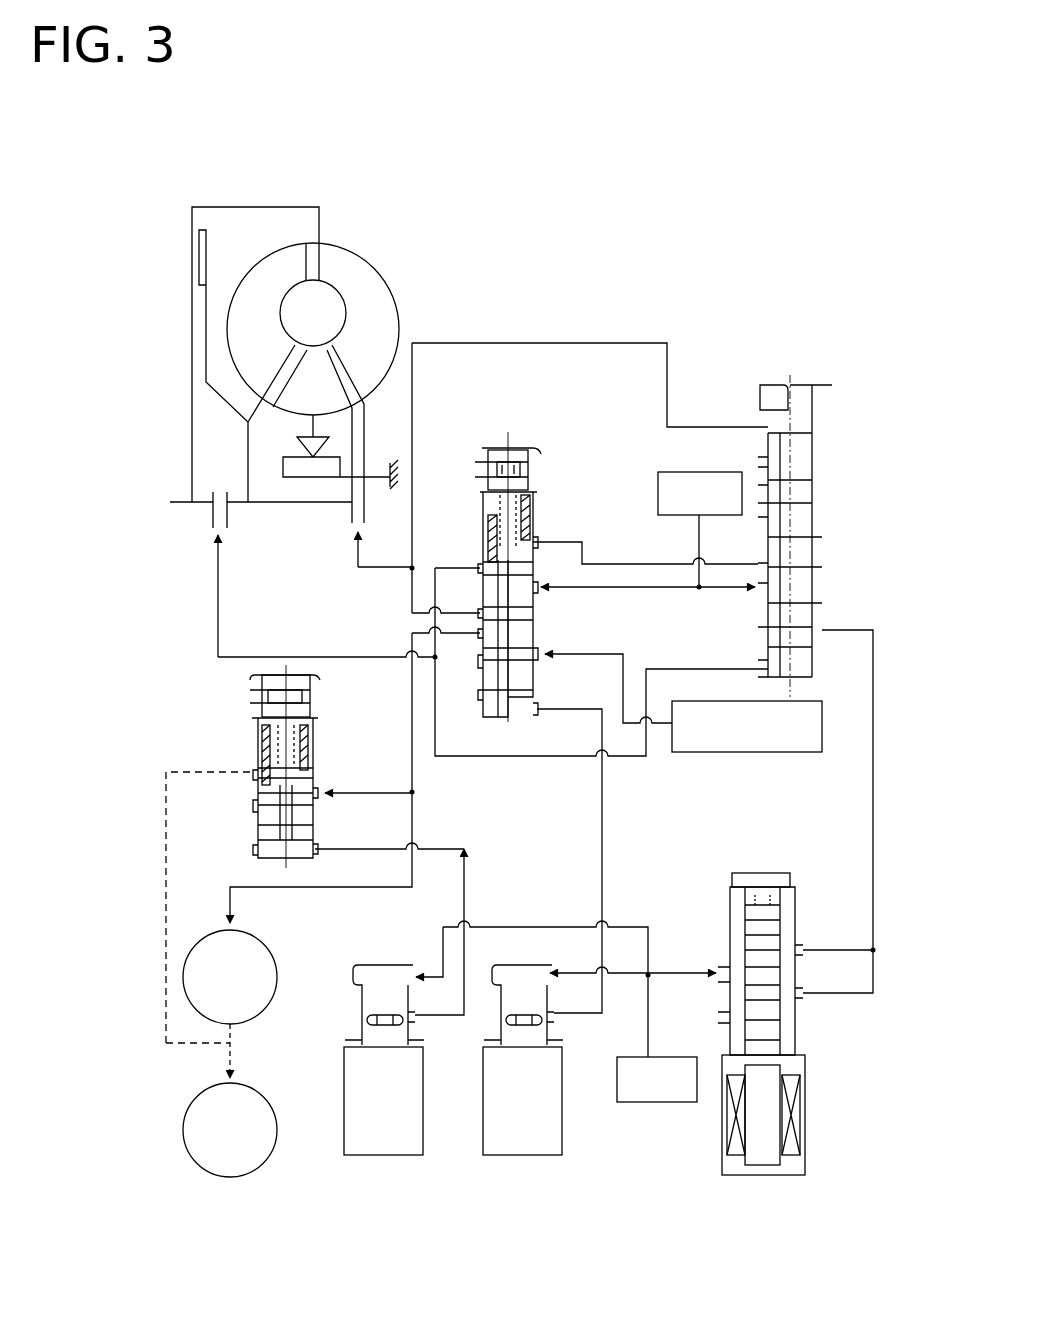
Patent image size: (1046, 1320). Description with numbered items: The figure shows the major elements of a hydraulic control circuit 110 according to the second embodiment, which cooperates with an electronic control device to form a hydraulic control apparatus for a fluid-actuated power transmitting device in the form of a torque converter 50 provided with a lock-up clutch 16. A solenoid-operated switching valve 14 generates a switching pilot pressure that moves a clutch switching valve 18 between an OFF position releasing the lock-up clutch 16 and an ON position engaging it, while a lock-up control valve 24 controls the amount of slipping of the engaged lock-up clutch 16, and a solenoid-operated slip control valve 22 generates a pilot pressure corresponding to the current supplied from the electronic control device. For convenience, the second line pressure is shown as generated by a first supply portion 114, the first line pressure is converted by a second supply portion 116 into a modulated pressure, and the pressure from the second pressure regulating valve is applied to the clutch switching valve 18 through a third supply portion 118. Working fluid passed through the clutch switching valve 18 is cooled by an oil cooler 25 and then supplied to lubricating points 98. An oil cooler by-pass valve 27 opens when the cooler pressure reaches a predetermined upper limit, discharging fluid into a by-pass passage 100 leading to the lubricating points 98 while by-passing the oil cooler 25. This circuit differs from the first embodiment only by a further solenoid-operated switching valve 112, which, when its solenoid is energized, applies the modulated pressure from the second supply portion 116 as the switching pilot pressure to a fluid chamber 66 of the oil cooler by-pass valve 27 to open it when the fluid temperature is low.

The hydraulic control circuit 110 is at (519, 172).
The lock-up clutch 16 is at (176, 329).
The torque converter 50 is at (406, 266).
The clutch switching valve 18 is at (509, 416).
The lock-up control valve 24 is at (791, 338).
The first supply portion 114 is at (712, 471).
The third supply portion 118 is at (690, 738).
The oil cooler by-pass valve 27 is at (331, 745).
The fluid chamber 66 is at (313, 858).
The by-pass passage 100 is at (166, 866).
The oil cooler 25 is at (272, 1007).
The lubricating points 98 is at (250, 1159).
The solenoid-operated switching valve 112 is at (393, 1170).
The solenoid-operated switching valve 14 is at (582, 1123).
The second supply portion 116 is at (684, 1043).
The solenoid-operated slip control valve 22 is at (832, 1050).